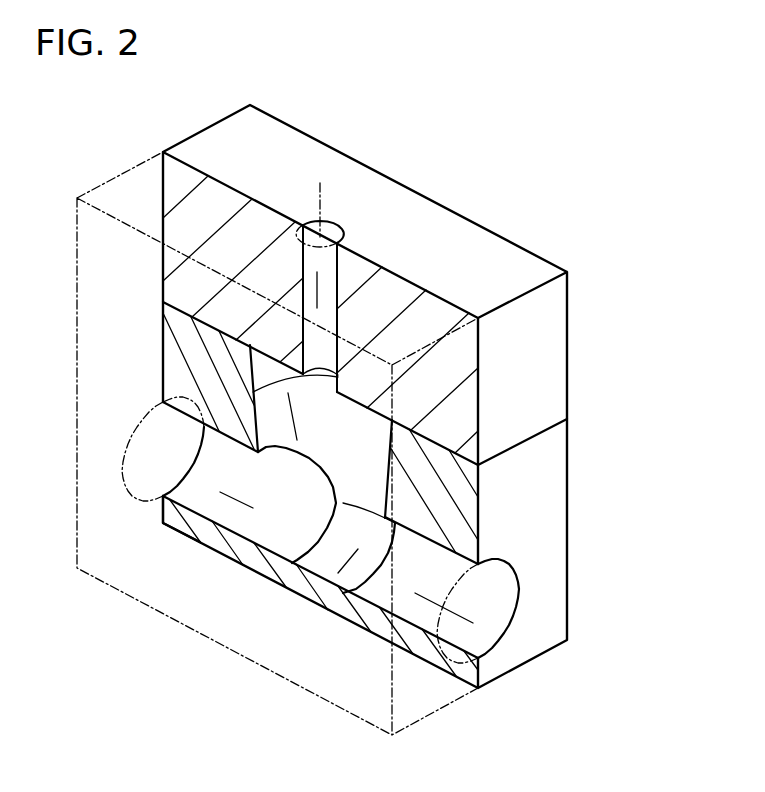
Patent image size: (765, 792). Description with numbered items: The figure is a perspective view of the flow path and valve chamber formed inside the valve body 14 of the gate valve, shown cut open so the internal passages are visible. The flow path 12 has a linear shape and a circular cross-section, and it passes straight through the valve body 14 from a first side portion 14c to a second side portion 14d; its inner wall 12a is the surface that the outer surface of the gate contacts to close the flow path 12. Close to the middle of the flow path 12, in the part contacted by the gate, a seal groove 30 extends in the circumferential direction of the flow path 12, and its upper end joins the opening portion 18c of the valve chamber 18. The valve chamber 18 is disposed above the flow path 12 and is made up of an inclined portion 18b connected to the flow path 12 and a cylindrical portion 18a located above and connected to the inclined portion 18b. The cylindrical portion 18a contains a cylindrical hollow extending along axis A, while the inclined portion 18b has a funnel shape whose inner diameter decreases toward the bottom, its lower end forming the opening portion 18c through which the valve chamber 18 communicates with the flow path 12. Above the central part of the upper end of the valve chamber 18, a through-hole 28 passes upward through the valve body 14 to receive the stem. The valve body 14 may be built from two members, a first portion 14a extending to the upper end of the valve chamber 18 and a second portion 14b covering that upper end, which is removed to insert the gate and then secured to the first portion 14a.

The flow path 12 is at (495, 628).
The inner wall of the flow path 12a is at (500, 580).
The valve body 14 is at (640, 372).
The first portion 14a is at (548, 456).
The second portion 14b is at (548, 390).
The first side portion 14c is at (548, 608).
The second side portion 14d is at (160, 508).
The valve chamber 18 is at (370, 460).
The cylindrical portion 18a is at (268, 368).
The inclined portion 18b is at (272, 408).
The opening portion 18c is at (312, 468).
The through-hole 28 is at (328, 280).
The seal groove 30 is at (325, 558).